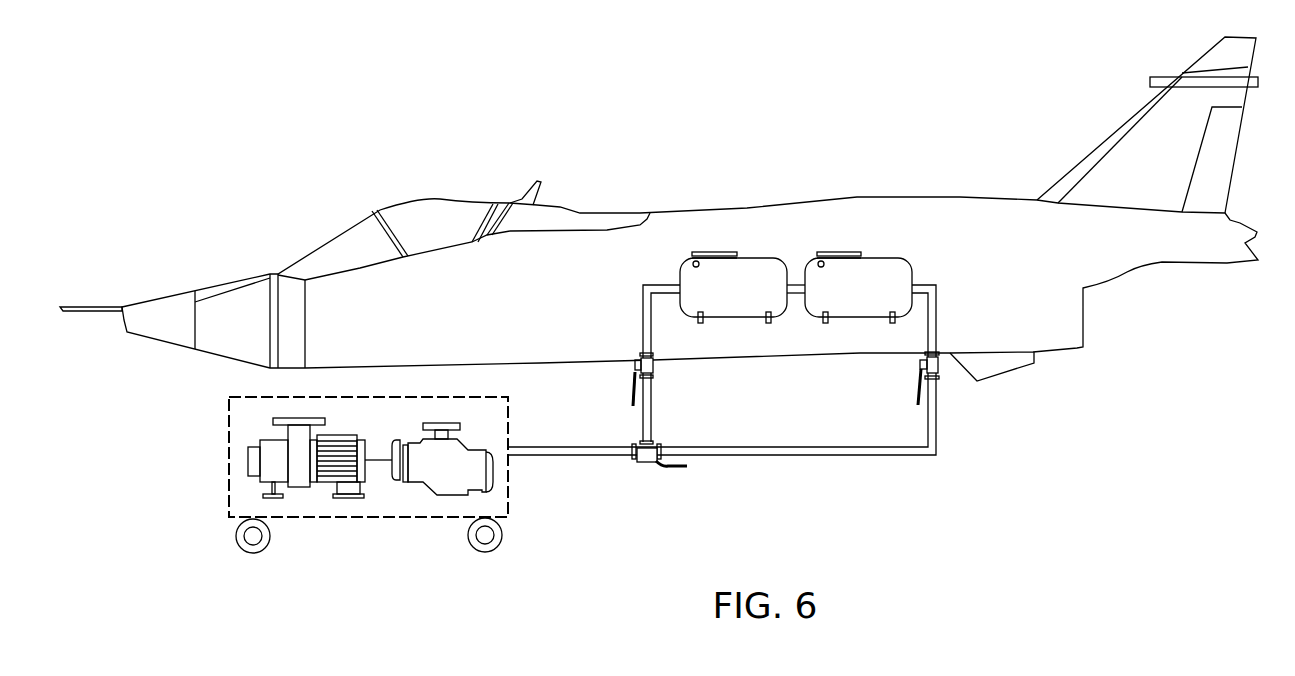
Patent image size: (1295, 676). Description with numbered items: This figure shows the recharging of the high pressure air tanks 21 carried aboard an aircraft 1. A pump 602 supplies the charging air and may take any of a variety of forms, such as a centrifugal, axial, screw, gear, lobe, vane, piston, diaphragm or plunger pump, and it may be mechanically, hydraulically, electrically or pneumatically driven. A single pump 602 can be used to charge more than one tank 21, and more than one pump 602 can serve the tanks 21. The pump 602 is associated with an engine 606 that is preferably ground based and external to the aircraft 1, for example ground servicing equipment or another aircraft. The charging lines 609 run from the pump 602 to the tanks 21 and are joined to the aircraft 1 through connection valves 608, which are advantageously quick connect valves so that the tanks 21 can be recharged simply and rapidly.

The aircraft 1 is at (630, 167).
The high pressure air tank 21 is at (760, 258).
The pump 602 is at (298, 487).
The engine 606 is at (413, 483).
The connection valve 608 is at (640, 362).
The charging line 609 is at (652, 406).